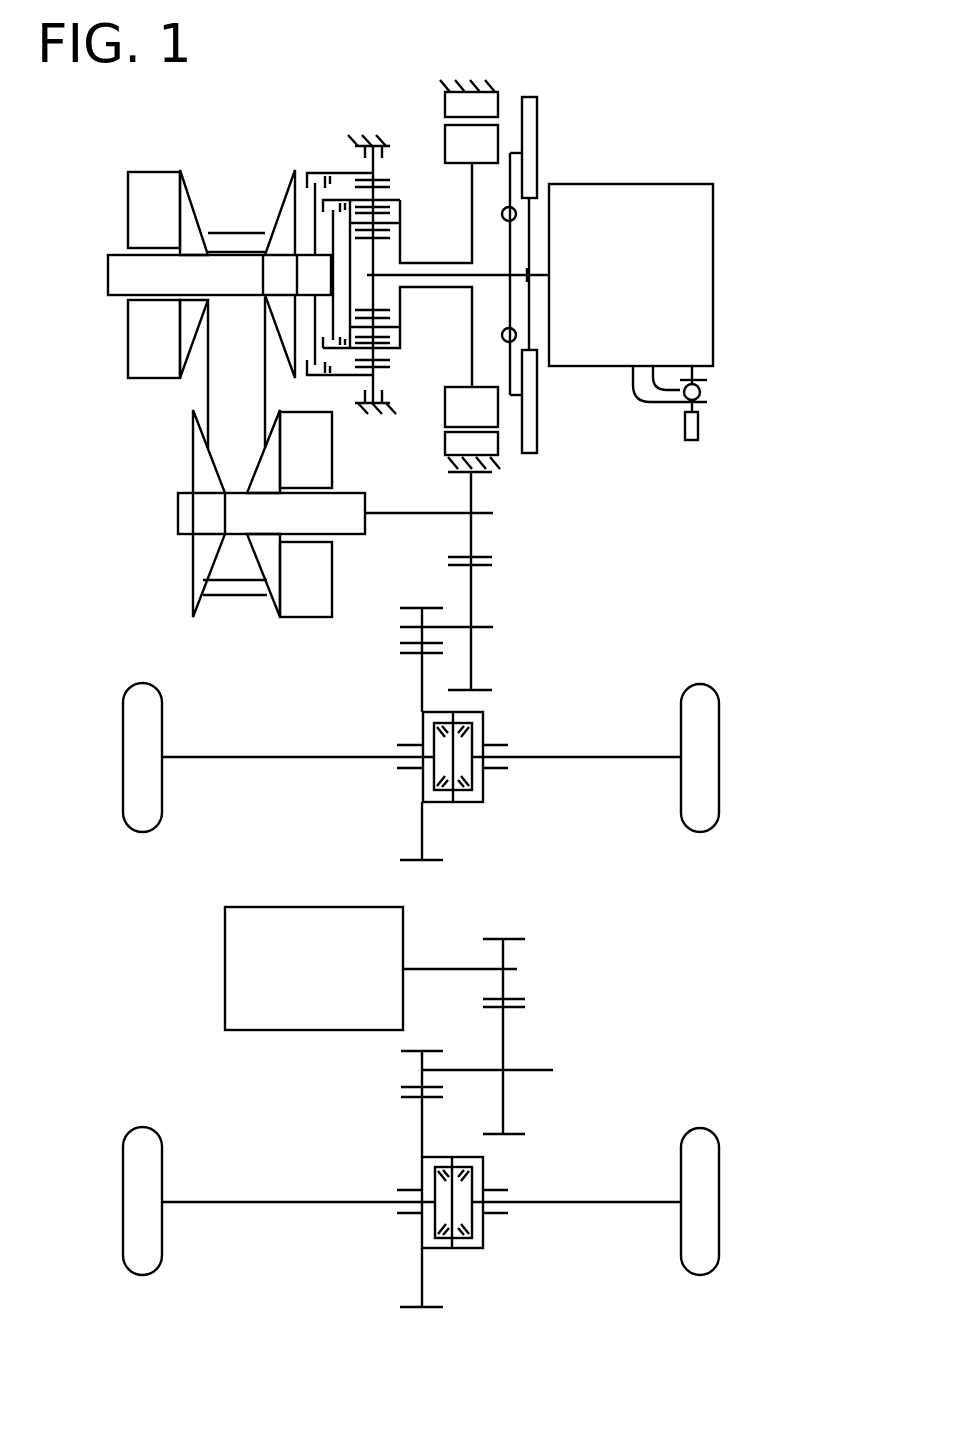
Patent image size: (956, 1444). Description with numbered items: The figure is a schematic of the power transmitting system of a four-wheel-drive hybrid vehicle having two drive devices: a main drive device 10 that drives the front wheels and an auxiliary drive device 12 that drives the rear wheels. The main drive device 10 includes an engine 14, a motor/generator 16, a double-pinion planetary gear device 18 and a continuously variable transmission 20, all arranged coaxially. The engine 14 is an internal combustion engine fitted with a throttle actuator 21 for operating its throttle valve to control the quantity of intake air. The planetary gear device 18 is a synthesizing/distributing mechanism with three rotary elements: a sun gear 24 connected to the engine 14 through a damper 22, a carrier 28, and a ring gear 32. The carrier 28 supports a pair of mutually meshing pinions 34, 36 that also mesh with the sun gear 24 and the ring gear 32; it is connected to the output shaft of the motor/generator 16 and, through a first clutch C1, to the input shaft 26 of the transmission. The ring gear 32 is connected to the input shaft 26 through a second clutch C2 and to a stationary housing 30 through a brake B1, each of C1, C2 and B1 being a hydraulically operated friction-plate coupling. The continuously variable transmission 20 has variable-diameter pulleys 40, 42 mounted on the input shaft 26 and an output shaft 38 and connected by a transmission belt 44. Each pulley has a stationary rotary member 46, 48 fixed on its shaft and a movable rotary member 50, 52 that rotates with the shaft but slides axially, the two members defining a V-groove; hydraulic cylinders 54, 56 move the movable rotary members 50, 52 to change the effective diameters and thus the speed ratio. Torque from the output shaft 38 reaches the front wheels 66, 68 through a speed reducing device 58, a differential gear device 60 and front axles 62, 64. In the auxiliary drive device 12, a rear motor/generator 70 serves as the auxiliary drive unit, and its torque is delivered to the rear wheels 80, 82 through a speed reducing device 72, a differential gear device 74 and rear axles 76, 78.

The main drive device 10 is at (633, 134).
The auxiliary drive device 12 is at (421, 1099).
The engine 14 is at (683, 193).
The motor/generator 16 is at (505, 81).
The planetary gear device 18 is at (419, 233).
The continuously variable transmission 20 is at (281, 383).
The throttle actuator 21 is at (685, 422).
The damper 22 is at (502, 337).
The sun gear 24 is at (385, 300).
The input shaft 26 is at (115, 273).
The carrier 28 is at (402, 338).
The housing 30 is at (372, 137).
The ring gear 32 is at (385, 176).
The pinion 34 is at (385, 227).
The pinion 36 is at (385, 191).
The output shaft 38 is at (180, 517).
The variable-diameter pulley 40 is at (200, 231).
The variable-diameter pulley 42 is at (318, 546).
The transmission belt 44 is at (221, 387).
The stationary rotary member 46 is at (282, 225).
The stationary rotary member 48 is at (195, 558).
The movable rotary member 50 is at (190, 205).
The movable rotary member 52 is at (265, 558).
The hydraulic cylinder 54 is at (135, 187).
The hydraulic cylinder 56 is at (327, 592).
The speed reducing device 58 is at (493, 604).
The differential gear device 60 is at (499, 722).
The front axle 62 is at (293, 755).
The front axle 64 is at (593, 755).
The front wheel 66 is at (127, 747).
The front wheel 68 is at (713, 743).
The rear motor/generator 70 is at (225, 950).
The speed reducing device 72 is at (531, 1033).
The differential gear device 74 is at (513, 1168).
The rear axle 76 is at (223, 1200).
The rear axle 78 is at (578, 1198).
The rear wheel 80 is at (127, 1165).
The rear wheel 82 is at (712, 1170).
The brake B1 is at (383, 153).
The first clutch C1 is at (345, 204).
The second clutch C2 is at (328, 178).